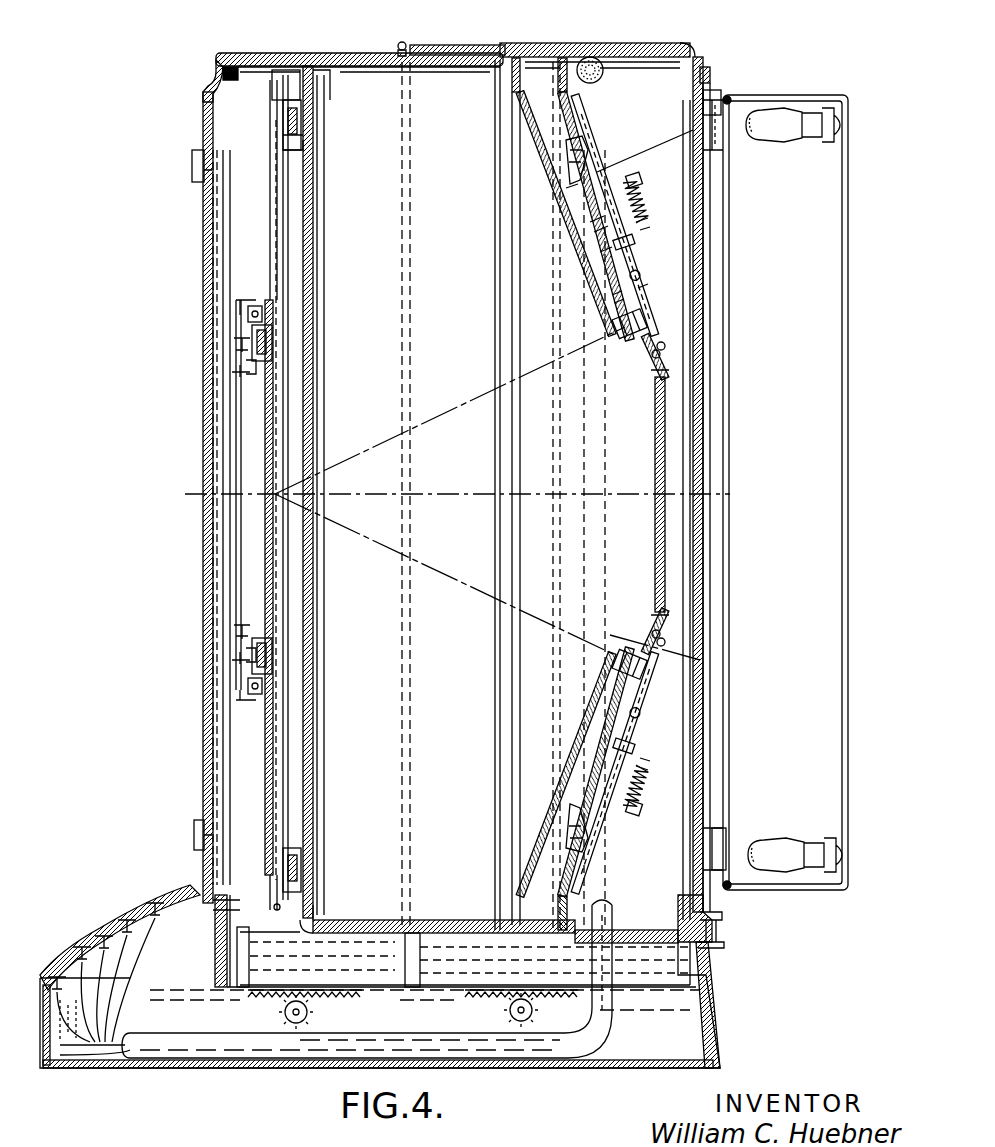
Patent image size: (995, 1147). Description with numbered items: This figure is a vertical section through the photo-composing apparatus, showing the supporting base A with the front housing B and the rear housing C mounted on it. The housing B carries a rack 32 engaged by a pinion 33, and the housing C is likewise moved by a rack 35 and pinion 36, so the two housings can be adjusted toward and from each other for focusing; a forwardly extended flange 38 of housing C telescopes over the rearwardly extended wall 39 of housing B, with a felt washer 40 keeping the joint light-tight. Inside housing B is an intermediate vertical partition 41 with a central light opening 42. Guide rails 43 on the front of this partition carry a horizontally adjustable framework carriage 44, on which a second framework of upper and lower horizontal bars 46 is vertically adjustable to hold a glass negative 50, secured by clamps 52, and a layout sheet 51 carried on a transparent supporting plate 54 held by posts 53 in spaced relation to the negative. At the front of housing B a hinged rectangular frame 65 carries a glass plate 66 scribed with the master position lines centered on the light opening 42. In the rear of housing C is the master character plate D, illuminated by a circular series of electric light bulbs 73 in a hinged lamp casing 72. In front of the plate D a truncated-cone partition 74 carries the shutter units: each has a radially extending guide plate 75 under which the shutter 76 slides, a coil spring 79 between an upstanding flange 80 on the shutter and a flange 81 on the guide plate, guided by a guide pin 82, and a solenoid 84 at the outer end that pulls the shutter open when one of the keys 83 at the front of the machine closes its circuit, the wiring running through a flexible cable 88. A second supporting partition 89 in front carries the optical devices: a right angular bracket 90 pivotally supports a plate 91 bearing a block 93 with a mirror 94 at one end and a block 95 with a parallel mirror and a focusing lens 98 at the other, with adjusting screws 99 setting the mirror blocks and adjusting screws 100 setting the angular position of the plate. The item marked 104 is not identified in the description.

The supporting base A is at (722, 1012).
The front housing B is at (300, 55).
The rear housing C is at (602, 46).
The master character plate D is at (700, 462).
The rack 32 is at (360, 996).
The pinion 33 is at (310, 1016).
The rack 35 is at (490, 996).
The pinion 36 is at (535, 1012).
The forwardly extended flange 38 is at (452, 50).
The rearwardly extended wall 39 is at (375, 53).
The felt washer 40 is at (406, 44).
The intermediate vertical partition 41 is at (312, 292).
The light opening 42 is at (316, 492).
The guide rails 43 is at (302, 126).
The framework carriage 44 is at (302, 148).
The horizontal bars 46 is at (270, 342).
The negative 50 is at (265, 556).
The layout sheet 51 is at (228, 460).
The clamps 52 is at (250, 608).
The posts 53 is at (252, 308).
The transparent supporting plate 54 is at (229, 430).
The hinged rectangular frame 65 is at (205, 180).
The glass plate 66 is at (210, 201).
The lamp casing 72 is at (848, 560).
The electric light bulbs 73 is at (794, 490).
The partition 74 is at (656, 272).
The guide plate 75 is at (602, 156).
The shutter 76 is at (598, 140).
The coil spring 79 is at (624, 184).
The upstanding flange 80 is at (640, 204).
The flange 81 is at (645, 151).
The guide pin 82 is at (645, 228).
The keys 83 is at (95, 936).
The solenoid 84 is at (584, 92).
The flexible cable 88 is at (525, 1045).
The second supporting partition 89 is at (538, 133).
The right angular bracket 90 is at (602, 258).
The plate 91 is at (594, 228).
The block 93 is at (556, 172).
The mirror 94 is at (565, 185).
The block 95 is at (643, 358).
The focusing lens 98 is at (612, 323).
The adjusting screws 99 is at (662, 350).
The adjusting screws 100 is at (615, 300).
The guide 104 is at (644, 292).